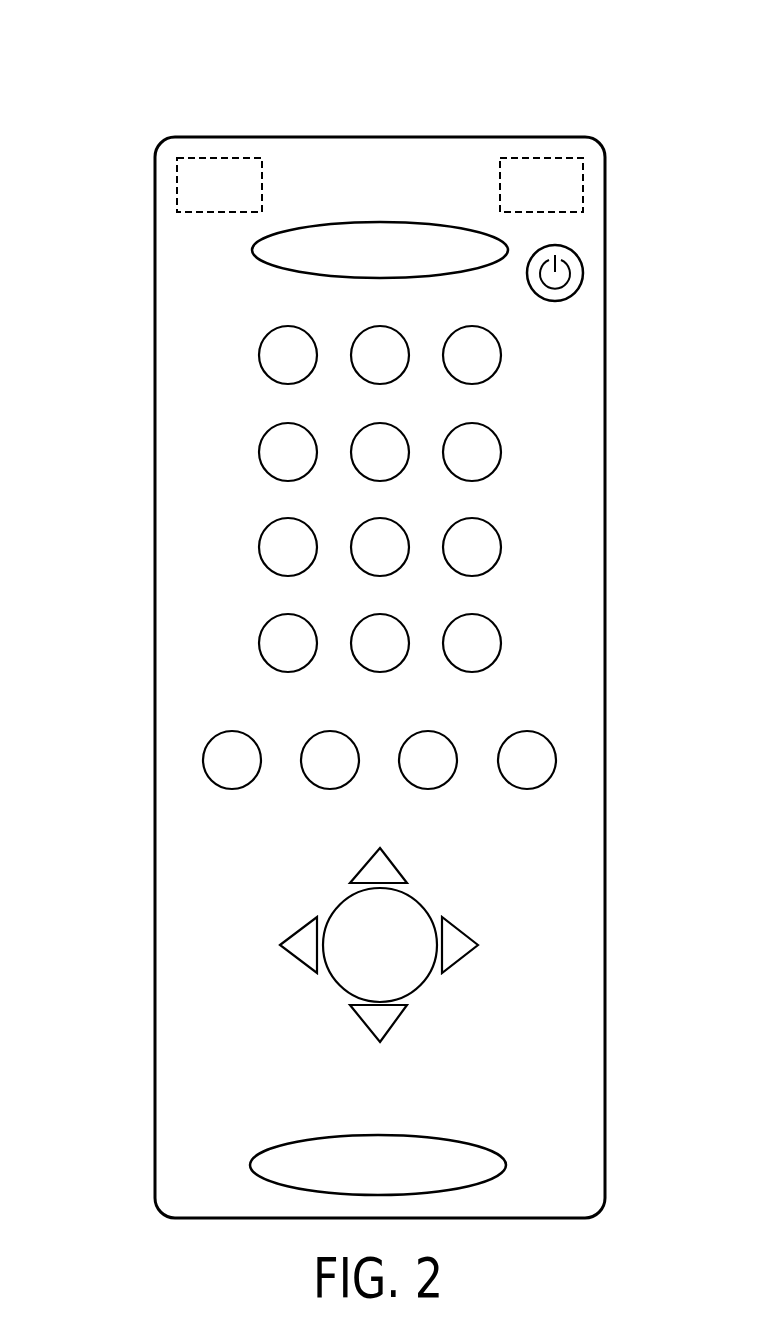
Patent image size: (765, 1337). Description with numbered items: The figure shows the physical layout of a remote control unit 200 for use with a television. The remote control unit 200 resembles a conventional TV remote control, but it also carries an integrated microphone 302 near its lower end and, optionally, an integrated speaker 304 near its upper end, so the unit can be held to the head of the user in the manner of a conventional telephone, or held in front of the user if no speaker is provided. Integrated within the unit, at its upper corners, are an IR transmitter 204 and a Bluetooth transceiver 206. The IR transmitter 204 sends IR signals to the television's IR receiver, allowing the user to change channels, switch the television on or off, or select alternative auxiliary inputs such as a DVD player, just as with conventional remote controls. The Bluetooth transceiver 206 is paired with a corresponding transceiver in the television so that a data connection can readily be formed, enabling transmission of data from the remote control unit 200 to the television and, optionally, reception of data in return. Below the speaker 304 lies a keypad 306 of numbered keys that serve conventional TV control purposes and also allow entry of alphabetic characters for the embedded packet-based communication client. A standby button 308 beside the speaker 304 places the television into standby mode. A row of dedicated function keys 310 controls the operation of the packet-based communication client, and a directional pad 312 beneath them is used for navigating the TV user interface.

The remote control unit 200 is at (148, 64).
The IR transmitter 204 is at (583, 172).
The Bluetooth transceiver 206 is at (177, 172).
The microphone 302 is at (375, 1135).
The speaker 304 is at (377, 222).
The keypad 306 is at (510, 330).
The standby button 308 is at (583, 273).
The dedicated function keys 310 is at (575, 731).
The directional pad 312 is at (492, 850).